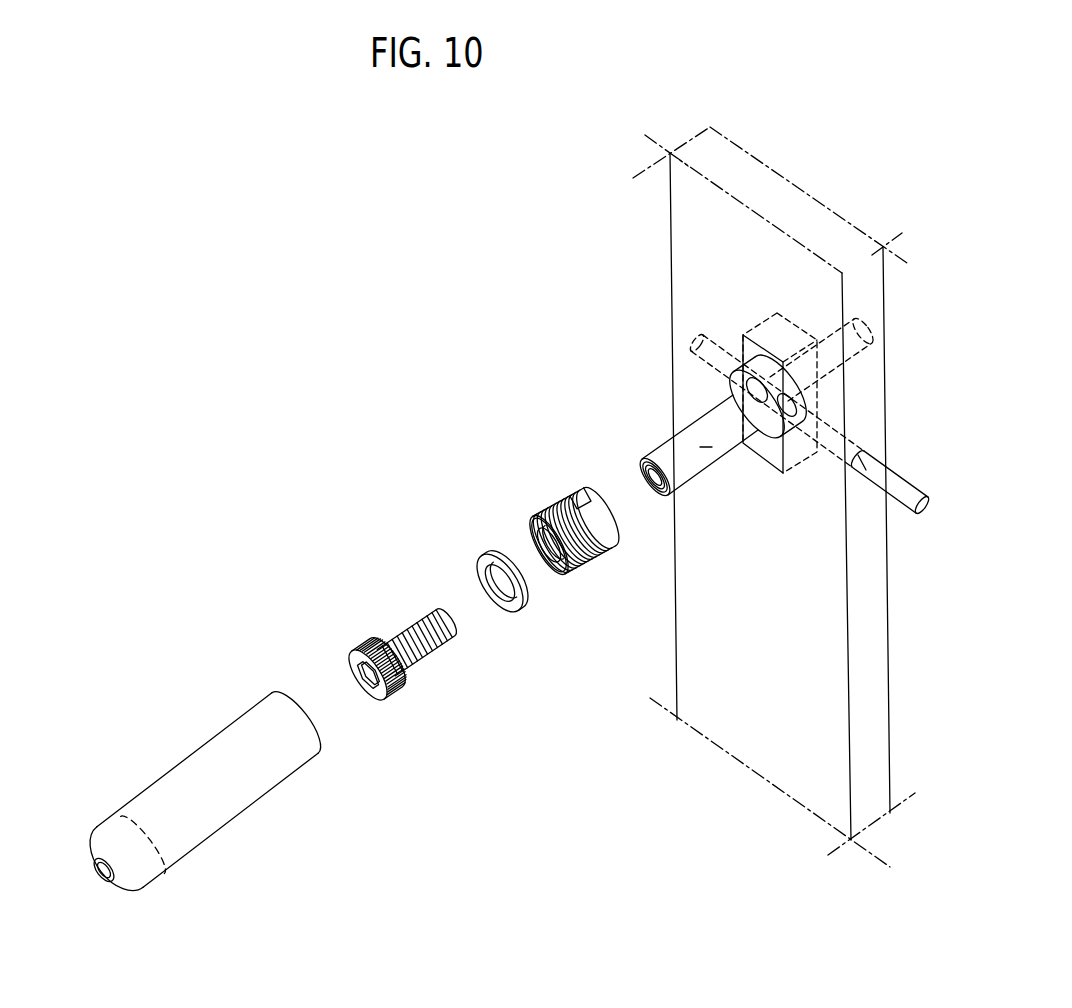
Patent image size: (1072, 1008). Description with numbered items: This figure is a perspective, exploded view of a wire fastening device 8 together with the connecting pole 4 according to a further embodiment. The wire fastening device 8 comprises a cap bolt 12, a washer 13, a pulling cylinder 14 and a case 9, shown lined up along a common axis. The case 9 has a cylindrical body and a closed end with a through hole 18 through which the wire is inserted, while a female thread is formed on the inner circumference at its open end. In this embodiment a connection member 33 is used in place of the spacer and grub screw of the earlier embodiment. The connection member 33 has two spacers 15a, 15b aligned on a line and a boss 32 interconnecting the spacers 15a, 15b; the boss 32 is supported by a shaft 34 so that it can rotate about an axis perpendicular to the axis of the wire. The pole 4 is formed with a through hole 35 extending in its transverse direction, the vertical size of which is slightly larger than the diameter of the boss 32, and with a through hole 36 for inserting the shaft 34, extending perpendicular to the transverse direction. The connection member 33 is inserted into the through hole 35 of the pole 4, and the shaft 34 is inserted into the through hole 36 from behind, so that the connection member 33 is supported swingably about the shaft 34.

The pole 4 is at (690, 230).
The wire fastening device 8 is at (485, 432).
The case 9 is at (193, 740).
The cap bolt 12 is at (397, 617).
The washer 13 is at (485, 548).
The pulling cylinder 14 is at (568, 483).
The spacer 15a is at (857, 310).
The spacer 15b is at (708, 447).
The through hole 18 is at (97, 877).
The boss 32 is at (735, 372).
The connection member 33 is at (787, 317).
The shaft 34 is at (912, 487).
The through hole 35 is at (752, 337).
The through hole 36 is at (870, 440).